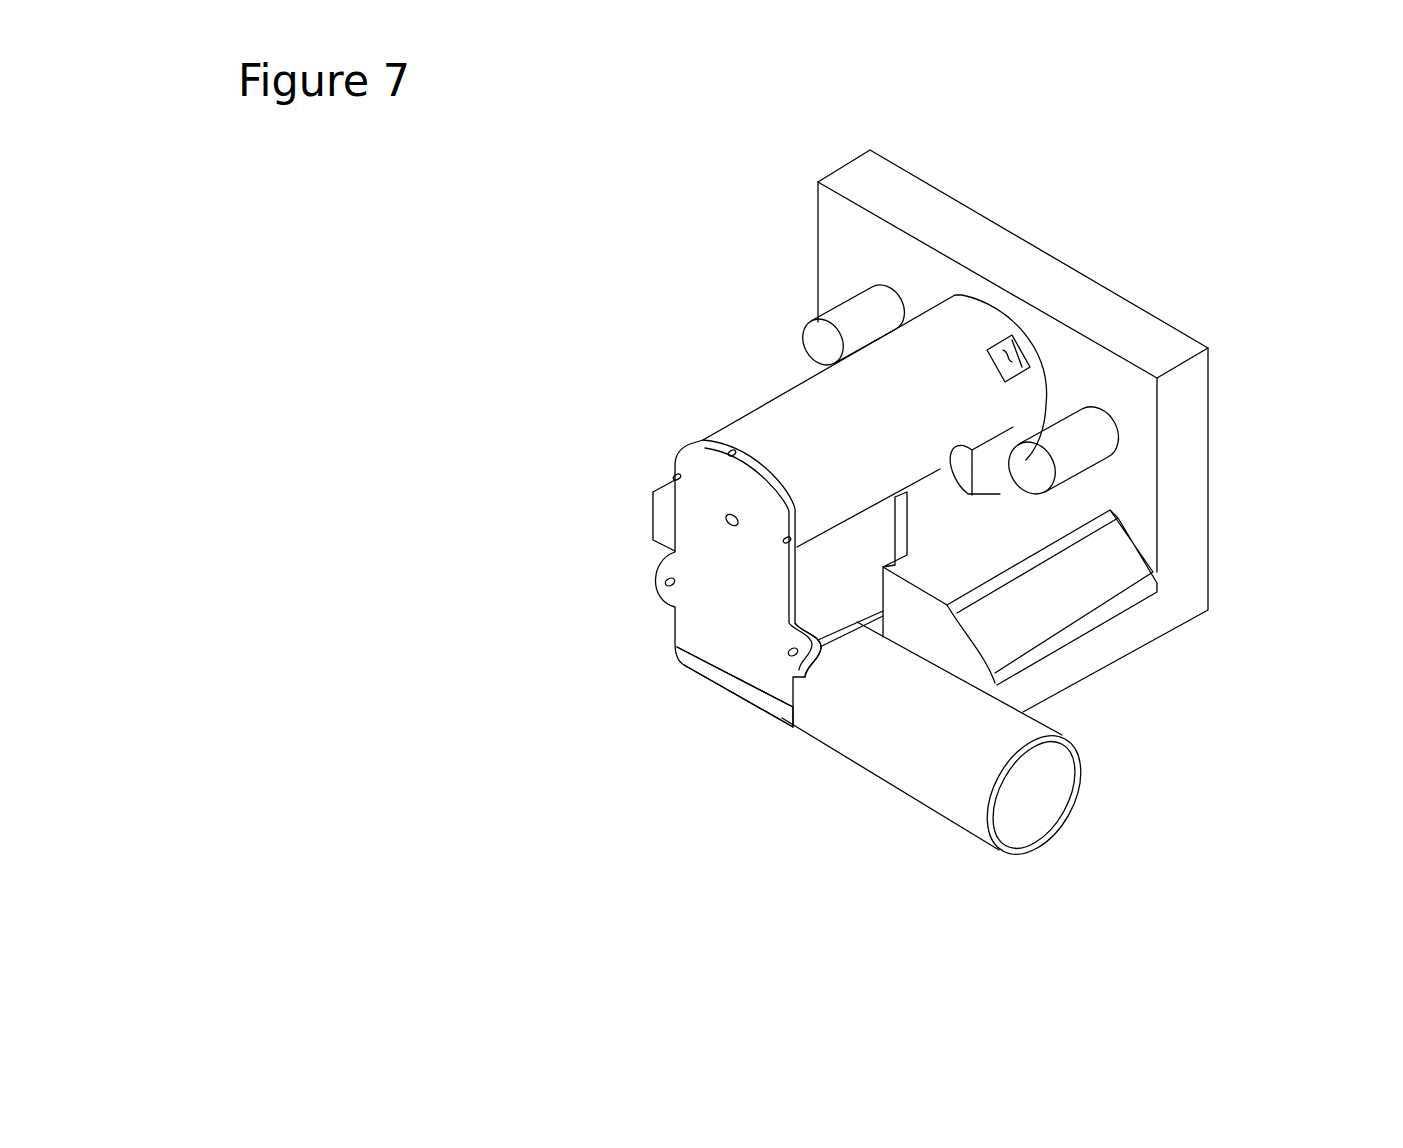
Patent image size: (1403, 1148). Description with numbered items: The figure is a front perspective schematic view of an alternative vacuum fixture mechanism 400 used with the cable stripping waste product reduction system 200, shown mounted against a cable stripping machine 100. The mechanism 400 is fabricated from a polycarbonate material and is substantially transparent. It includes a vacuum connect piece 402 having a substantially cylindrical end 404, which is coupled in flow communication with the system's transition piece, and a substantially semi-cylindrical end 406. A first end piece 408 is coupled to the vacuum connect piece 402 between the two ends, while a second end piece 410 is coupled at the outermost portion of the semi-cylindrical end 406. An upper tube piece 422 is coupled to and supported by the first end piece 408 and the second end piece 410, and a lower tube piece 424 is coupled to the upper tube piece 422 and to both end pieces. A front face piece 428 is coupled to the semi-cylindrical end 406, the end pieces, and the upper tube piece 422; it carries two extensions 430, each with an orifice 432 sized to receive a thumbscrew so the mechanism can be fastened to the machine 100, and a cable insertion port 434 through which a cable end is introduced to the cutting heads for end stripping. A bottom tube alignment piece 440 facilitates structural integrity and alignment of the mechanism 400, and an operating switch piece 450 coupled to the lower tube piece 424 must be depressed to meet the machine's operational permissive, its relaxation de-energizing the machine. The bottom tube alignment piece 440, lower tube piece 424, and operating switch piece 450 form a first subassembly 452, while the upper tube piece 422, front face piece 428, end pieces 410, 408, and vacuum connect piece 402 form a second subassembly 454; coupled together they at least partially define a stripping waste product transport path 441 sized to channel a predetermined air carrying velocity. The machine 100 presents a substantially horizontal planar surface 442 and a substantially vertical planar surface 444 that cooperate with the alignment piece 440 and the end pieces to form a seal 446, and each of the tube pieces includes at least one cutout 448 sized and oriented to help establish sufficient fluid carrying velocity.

The cable stripping machine 100 is at (1195, 418).
The cable stripping waste product reduction system 200 is at (845, 885).
The vacuum fixture mechanism 400 is at (654, 278).
The vacuum connect piece 402 is at (1075, 740).
The substantially cylindrical end 404 is at (983, 865).
The substantially semi-cylindrical end 406 is at (695, 690).
The first end piece 408 is at (858, 630).
The second end piece 410 is at (660, 440).
The upper tube piece 422 is at (815, 405).
The lower tube piece 424 is at (930, 497).
The front face piece 428 is at (745, 612).
The extension 430 is at (653, 551).
The orifice 432 is at (665, 584).
The cable insertion port 434 is at (728, 522).
The bottom tube alignment piece 440 is at (932, 490).
The stripping waste product transport path 441 is at (1048, 805).
The substantially horizontal planar surface 442 is at (928, 529).
The substantially vertical planar surface 444 is at (939, 625).
The seal 446 is at (905, 576).
The cutout 448 is at (1018, 353).
The operating switch piece 450 is at (1007, 447).
The first subassembly 452 is at (998, 500).
The second subassembly 454 is at (545, 686).